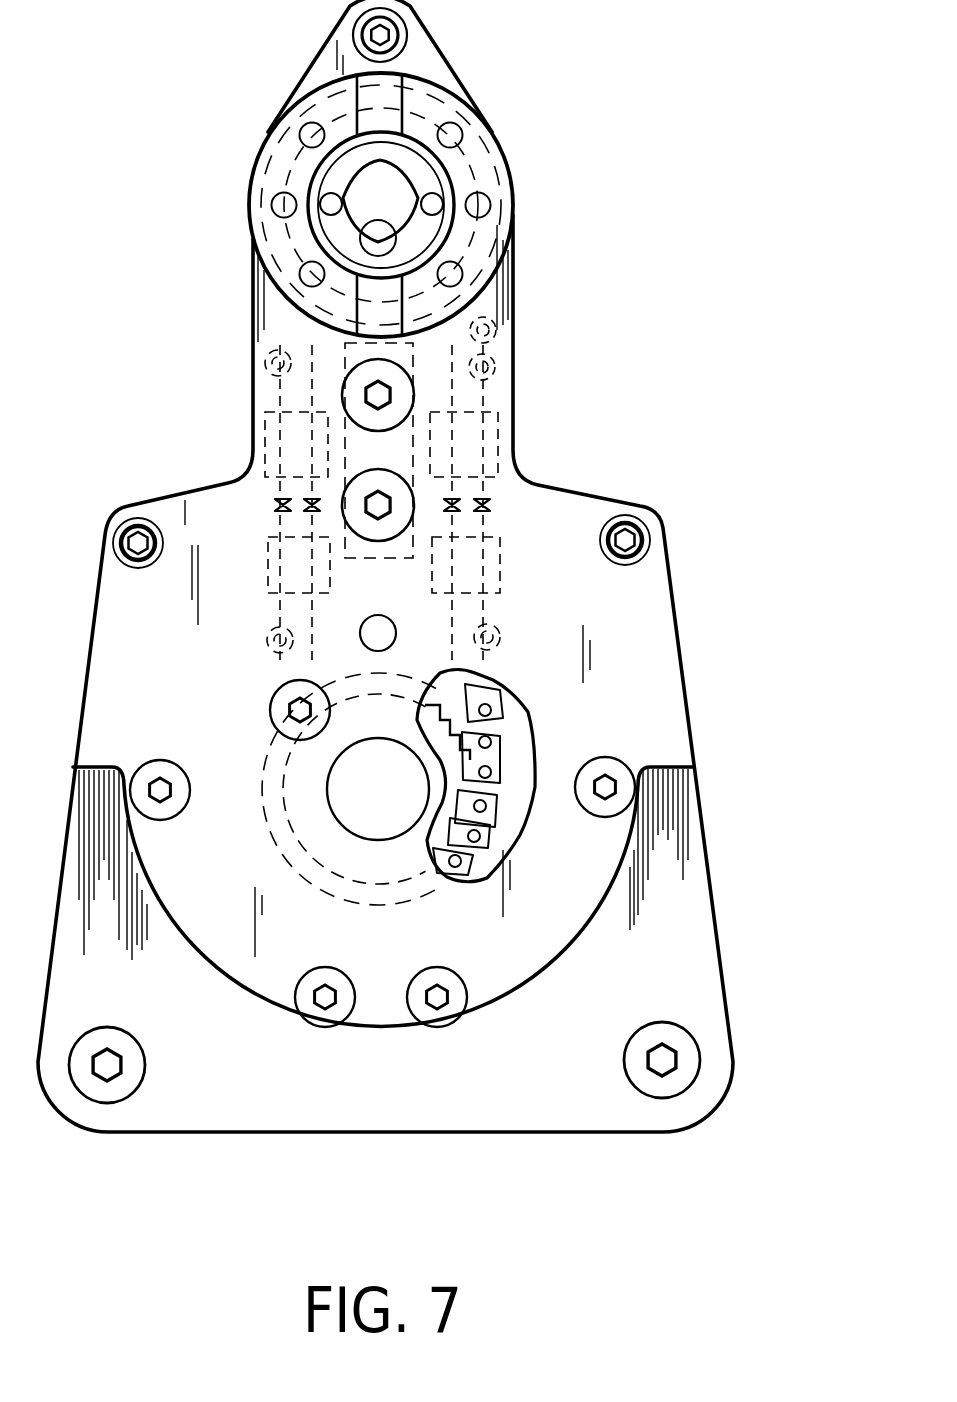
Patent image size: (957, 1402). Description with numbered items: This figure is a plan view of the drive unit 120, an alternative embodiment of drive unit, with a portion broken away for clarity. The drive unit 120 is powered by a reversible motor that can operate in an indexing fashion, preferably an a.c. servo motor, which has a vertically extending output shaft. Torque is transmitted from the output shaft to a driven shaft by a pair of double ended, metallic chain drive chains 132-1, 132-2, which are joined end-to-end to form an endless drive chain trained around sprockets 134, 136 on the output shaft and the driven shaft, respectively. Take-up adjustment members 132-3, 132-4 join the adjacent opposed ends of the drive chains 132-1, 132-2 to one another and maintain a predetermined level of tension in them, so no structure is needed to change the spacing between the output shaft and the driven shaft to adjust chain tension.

The drive unit 120 is at (717, 912).
The sprocket 136 is at (455, 246).
The sprocket 134 is at (452, 752).
The drive chain 132-1 is at (453, 762).
The drive chain 132-2 is at (505, 327).
The take-up adjustment member 132-3 is at (490, 503).
The take-up adjustment member 132-4 is at (275, 505).